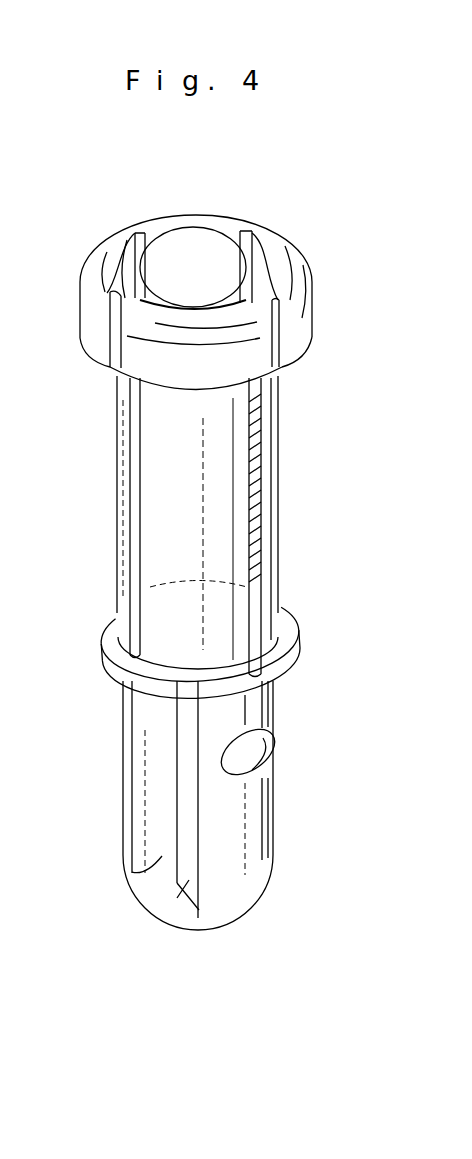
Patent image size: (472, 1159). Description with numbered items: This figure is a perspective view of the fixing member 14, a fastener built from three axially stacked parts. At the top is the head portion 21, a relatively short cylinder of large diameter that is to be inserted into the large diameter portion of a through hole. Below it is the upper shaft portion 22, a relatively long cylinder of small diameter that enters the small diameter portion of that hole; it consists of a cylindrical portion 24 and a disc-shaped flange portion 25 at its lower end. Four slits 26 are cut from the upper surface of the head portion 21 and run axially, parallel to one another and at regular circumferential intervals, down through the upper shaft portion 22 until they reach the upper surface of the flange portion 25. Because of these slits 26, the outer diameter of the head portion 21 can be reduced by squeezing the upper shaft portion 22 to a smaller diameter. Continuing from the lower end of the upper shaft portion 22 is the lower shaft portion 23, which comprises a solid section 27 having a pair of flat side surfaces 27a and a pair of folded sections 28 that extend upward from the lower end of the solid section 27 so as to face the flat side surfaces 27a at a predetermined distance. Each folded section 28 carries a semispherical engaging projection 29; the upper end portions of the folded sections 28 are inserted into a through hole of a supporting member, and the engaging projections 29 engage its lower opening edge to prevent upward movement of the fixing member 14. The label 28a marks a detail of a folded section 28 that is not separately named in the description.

The fixing member 14 is at (290, 523).
The head portion 21 is at (305, 277).
The upper shaft portion 22 is at (280, 438).
The lower shaft portion 23 is at (268, 802).
The cylindrical portion 24 is at (168, 492).
The flange portion 25 is at (117, 648).
The slits 26 is at (113, 348).
The solid section 27 is at (140, 895).
The flat side surfaces 27a is at (188, 882).
The folded sections 28 is at (238, 853).
The rib end 28a is at (248, 703).
The engaging projection 29 is at (268, 732).